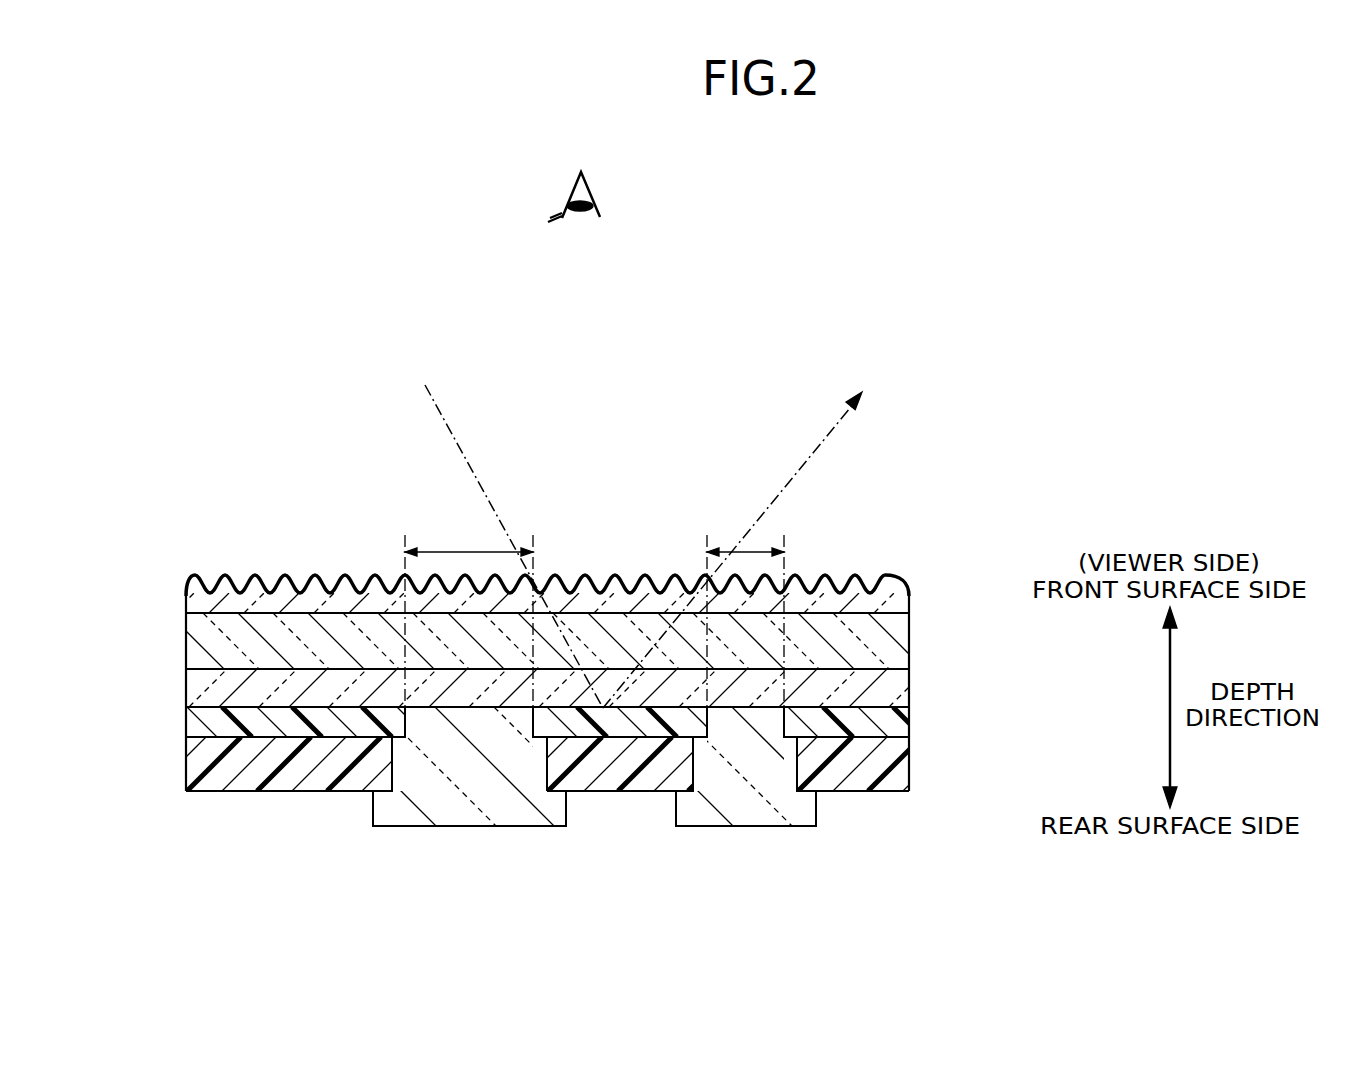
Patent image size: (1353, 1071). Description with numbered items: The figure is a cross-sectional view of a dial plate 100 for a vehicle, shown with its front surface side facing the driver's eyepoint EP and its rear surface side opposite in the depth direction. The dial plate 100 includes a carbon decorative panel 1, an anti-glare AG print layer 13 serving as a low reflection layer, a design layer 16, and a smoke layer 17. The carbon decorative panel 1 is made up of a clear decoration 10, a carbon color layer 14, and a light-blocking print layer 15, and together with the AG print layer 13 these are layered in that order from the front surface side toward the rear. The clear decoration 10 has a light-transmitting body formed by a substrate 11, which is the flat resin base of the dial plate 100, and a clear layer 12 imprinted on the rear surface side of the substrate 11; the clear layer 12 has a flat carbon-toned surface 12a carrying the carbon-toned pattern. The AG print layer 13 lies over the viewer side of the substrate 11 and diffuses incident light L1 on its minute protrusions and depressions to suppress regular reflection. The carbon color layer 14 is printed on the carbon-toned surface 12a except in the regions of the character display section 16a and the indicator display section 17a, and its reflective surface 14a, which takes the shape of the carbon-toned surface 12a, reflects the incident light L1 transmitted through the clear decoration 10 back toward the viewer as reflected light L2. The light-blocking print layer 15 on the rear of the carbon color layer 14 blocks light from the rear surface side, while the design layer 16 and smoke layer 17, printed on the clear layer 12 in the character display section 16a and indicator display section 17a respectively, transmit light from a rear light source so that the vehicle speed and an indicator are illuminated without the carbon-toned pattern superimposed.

The carbon decorative panel 1 is at (621, 698).
The dial plate 100 is at (621, 629).
The clear decoration 10 is at (608, 660).
The substrate 11 is at (909, 628).
The clear layer 12 is at (909, 688).
The carbon-toned surface 12a is at (348, 716).
The AG print layer 13 is at (909, 580).
The carbon color layer 14 is at (909, 727).
The reflective surface 14a is at (283, 700).
The light-blocking print layer 15 is at (909, 769).
The design layer 16 is at (471, 827).
The character display section 16a is at (450, 549).
The smoke layer 17 is at (747, 827).
The indicator display section 17a is at (755, 548).
The incident light L1 is at (452, 432).
The reflected light L2 is at (815, 450).
The eyepoint EP is at (596, 180).